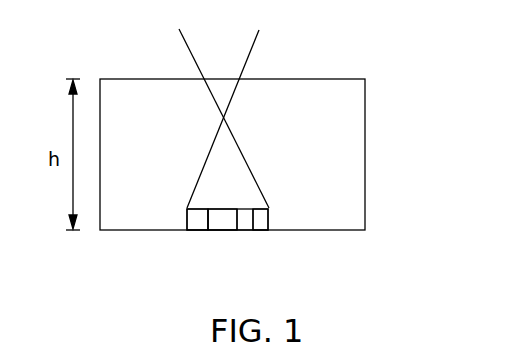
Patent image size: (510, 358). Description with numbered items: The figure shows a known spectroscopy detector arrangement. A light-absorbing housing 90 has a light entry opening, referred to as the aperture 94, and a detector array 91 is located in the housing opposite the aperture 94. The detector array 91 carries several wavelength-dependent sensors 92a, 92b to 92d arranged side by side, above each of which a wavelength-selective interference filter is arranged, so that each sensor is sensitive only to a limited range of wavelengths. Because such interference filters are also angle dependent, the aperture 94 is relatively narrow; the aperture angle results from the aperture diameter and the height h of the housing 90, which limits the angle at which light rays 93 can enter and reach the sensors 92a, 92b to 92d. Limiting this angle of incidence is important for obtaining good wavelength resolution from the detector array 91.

The housing 90 is at (365, 158).
The detector array 91 is at (284, 205).
The sensor 92a is at (200, 222).
The sensor 92b is at (223, 222).
The sensor 92d is at (263, 222).
The light rays 93 is at (225, 107).
The aperture 94 is at (247, 86).